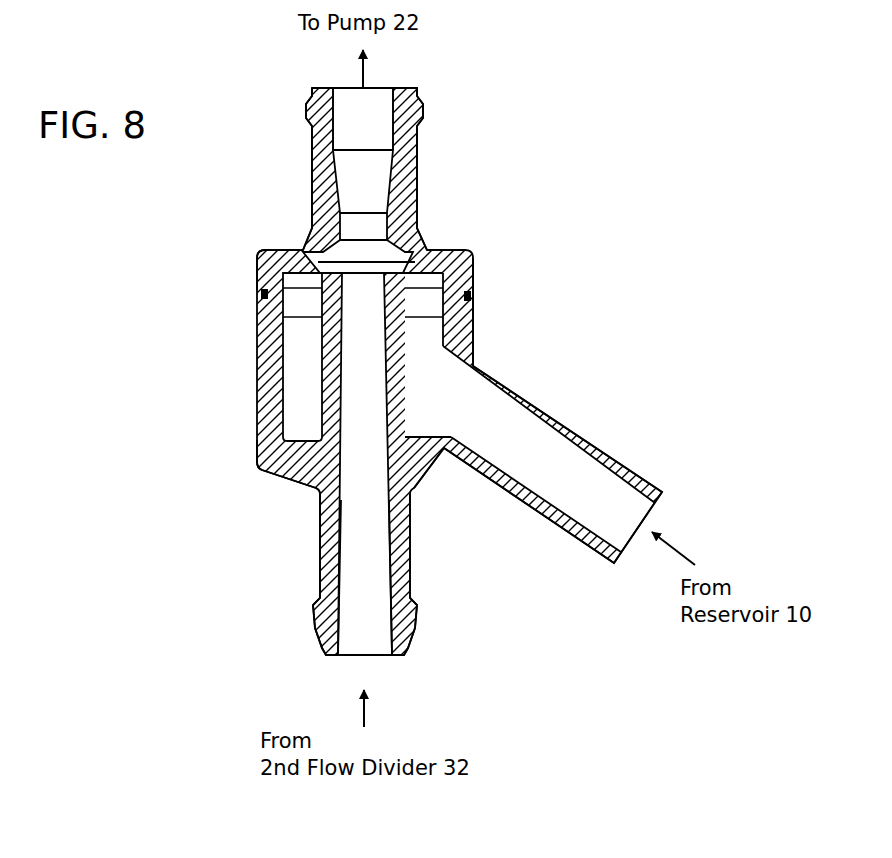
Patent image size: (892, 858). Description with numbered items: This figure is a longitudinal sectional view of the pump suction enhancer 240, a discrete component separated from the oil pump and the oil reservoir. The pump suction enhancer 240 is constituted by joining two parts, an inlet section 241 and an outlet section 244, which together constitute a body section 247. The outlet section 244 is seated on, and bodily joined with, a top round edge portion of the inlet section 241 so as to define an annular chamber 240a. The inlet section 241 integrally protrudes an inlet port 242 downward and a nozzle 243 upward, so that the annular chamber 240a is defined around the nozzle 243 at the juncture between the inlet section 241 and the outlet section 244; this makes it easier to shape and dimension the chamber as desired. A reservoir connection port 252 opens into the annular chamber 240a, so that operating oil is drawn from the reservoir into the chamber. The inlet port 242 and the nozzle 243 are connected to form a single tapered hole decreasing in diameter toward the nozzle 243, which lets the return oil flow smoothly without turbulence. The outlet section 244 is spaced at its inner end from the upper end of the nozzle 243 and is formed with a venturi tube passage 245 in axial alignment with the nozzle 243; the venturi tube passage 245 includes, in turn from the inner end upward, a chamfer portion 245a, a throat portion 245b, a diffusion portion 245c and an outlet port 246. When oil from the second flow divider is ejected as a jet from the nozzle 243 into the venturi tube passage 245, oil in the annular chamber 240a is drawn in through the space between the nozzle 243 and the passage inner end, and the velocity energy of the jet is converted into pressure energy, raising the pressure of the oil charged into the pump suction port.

The pump suction enhancer 240 is at (506, 271).
The annular chamber 240a is at (286, 385).
The inlet section 241 is at (260, 473).
The inlet port 242 is at (365, 613).
The nozzle 243 is at (347, 297).
The outlet section 244 is at (268, 271).
The venturi tube passage 245 is at (344, 180).
The chamfer portion 245a is at (377, 237).
The throat portion 245b is at (362, 224).
The diffusion portion 245c is at (370, 175).
The outlet port 246 is at (365, 109).
The body section 247 is at (483, 320).
The reservoir connection port 252 is at (605, 470).